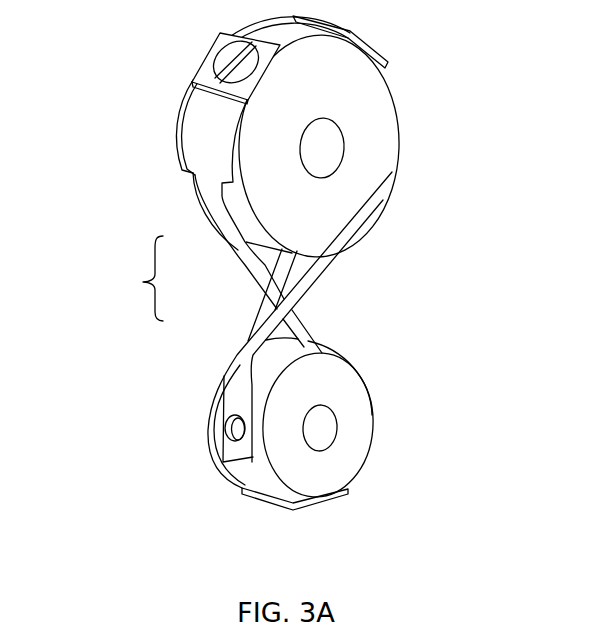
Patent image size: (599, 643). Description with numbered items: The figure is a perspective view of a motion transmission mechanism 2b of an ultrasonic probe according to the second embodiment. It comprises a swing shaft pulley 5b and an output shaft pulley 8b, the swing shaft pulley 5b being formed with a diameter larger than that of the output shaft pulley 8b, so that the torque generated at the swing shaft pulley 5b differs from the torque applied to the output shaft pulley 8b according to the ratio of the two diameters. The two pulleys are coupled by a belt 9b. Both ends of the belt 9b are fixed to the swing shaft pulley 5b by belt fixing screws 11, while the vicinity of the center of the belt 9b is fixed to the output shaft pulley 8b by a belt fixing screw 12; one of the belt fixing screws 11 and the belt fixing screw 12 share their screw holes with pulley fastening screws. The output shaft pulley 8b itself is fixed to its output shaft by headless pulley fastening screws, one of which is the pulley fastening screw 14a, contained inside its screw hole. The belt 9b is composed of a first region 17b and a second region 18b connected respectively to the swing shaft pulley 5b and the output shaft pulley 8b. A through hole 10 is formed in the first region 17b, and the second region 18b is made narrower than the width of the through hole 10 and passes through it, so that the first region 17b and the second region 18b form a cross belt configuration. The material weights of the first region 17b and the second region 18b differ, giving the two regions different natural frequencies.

The motion transmission mechanism 2b is at (422, 46).
The swing shaft pulley 5b is at (377, 128).
The output shaft pulley 8b is at (357, 412).
The belt 9b is at (106, 278).
The through hole 10 is at (303, 283).
The belt fixing screws 11 is at (223, 60).
The belt fixing screw 12 is at (275, 510).
The pulley fastening screw 14a is at (232, 431).
The first region 17b is at (256, 332).
The second region 18b is at (243, 250).